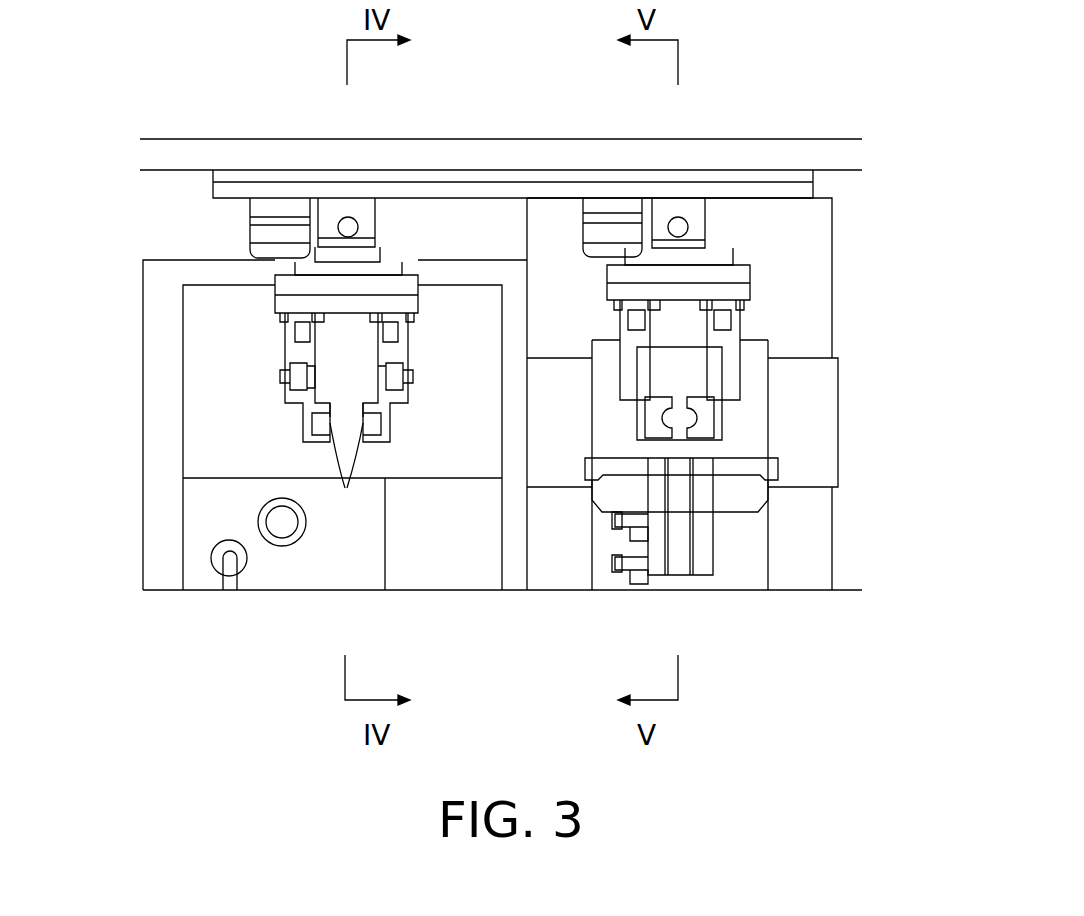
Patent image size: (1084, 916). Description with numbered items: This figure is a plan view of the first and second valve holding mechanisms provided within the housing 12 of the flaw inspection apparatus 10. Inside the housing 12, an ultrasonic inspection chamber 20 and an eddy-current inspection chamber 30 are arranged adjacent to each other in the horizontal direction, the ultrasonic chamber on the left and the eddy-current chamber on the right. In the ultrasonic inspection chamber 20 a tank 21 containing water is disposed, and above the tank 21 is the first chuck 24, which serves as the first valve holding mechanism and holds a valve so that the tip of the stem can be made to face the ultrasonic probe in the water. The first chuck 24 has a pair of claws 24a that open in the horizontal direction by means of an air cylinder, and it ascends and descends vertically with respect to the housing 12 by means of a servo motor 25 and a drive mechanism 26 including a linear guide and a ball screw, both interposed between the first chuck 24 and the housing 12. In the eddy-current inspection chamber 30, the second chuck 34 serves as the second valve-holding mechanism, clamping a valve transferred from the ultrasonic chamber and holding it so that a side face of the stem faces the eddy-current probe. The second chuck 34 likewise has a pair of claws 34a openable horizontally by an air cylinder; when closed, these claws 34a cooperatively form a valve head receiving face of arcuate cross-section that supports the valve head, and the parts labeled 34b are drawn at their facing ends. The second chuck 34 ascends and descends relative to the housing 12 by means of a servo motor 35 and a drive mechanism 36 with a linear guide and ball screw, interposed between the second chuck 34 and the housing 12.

The flaw inspection apparatus 10 is at (918, 216).
The housing 12 is at (520, 138).
The ultrasonic inspection chamber 20 is at (218, 368).
The tank 21 is at (208, 327).
The first chuck 24 is at (276, 388).
The claws 24a is at (344, 472).
The servo motor 25 is at (250, 233).
The drive mechanism 26 is at (332, 210).
The eddy-current inspection chamber 30 is at (773, 393).
The second chuck 34 is at (750, 418).
The claws 34a is at (655, 412).
The claw 34b is at (660, 425).
The servo motor 35 is at (600, 215).
The drive mechanism 36 is at (692, 218).